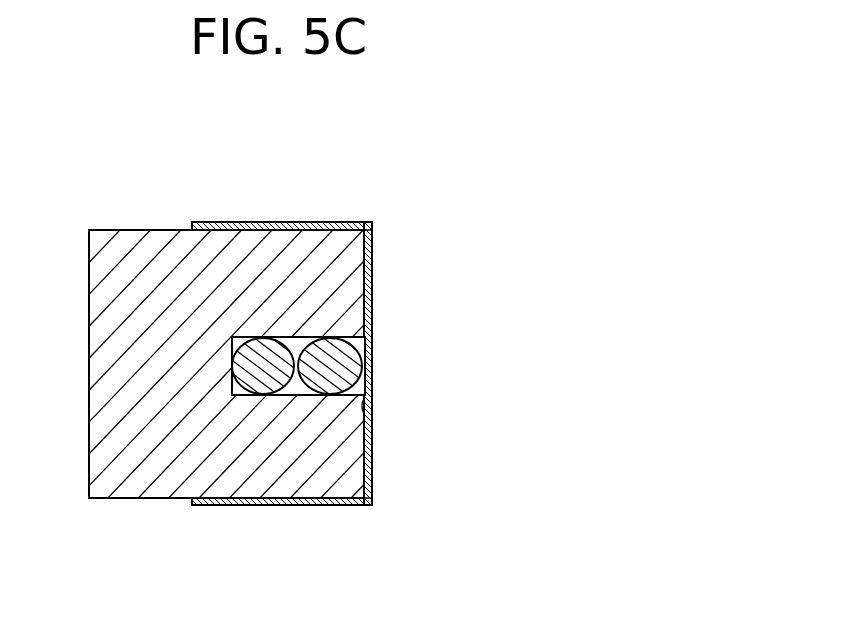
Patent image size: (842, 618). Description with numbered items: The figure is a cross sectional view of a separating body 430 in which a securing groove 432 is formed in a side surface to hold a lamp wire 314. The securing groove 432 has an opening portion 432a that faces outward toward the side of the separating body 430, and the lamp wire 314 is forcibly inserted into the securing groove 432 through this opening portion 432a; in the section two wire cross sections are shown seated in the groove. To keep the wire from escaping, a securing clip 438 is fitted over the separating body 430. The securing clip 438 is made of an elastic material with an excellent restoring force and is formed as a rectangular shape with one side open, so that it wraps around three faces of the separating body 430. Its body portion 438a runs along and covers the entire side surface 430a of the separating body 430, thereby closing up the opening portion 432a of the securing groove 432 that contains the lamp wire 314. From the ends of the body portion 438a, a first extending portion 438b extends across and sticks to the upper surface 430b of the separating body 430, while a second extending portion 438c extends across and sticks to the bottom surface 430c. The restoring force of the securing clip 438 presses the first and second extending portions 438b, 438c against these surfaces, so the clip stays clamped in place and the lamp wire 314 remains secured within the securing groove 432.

The lamp wire 314 is at (262, 340).
The separating body 430 is at (143, 498).
The side surface 430a is at (363, 505).
The upper surface 430b is at (128, 230).
The bottom surface 430c is at (103, 498).
The securing groove 432 is at (351, 335).
The opening portion 432a is at (366, 404).
The securing clip 438 is at (372, 355).
The body portion 438a is at (372, 478).
The first extending portion 438b is at (305, 222).
The second extending portion 438c is at (288, 505).